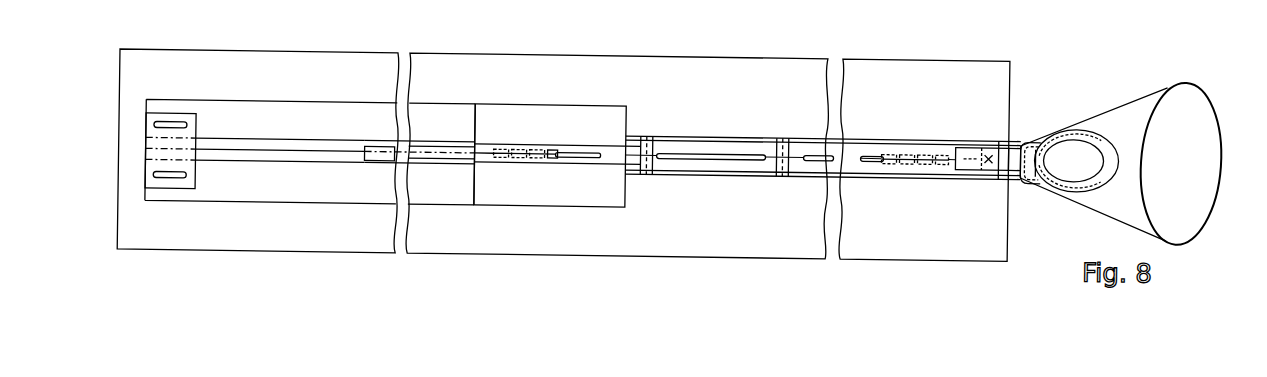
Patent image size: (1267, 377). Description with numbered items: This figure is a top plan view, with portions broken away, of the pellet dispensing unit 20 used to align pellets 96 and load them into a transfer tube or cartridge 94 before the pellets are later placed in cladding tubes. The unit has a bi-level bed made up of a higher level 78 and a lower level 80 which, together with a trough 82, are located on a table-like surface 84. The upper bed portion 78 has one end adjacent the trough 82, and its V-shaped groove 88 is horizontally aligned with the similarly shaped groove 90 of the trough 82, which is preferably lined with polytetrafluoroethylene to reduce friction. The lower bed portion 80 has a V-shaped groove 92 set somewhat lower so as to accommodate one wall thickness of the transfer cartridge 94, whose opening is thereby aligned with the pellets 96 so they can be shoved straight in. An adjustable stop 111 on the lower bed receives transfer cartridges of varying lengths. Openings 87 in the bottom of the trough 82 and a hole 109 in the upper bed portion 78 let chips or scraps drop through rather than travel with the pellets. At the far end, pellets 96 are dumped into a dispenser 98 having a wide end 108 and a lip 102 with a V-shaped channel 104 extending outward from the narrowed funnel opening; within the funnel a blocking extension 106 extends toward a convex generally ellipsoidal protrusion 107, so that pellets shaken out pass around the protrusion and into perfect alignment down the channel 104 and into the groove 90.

The pellet dispensing unit 20 is at (588, 47).
The higher level bed portion 78 is at (598, 98).
The lower level bed portion 80 is at (338, 98).
The trough 82 is at (856, 133).
The table-like surface 84 is at (930, 48).
The openings 87 is at (722, 155).
The V-shaped groove 88 is at (618, 139).
The groove 90 is at (773, 131).
The V-shaped groove 92 is at (283, 136).
The transfer tube or cartridge 94 is at (434, 143).
The pellets 96 is at (507, 143).
The dispenser 98 is at (1160, 80).
The lip 102 is at (980, 165).
The V-shaped channel 104 is at (1003, 170).
The blocking extension 106 is at (1035, 137).
The convex generally ellipsoidal protrusion 107 is at (1102, 138).
The wide end 108 is at (1216, 131).
The hole 109 is at (582, 153).
The adjustable stop 111 is at (194, 129).